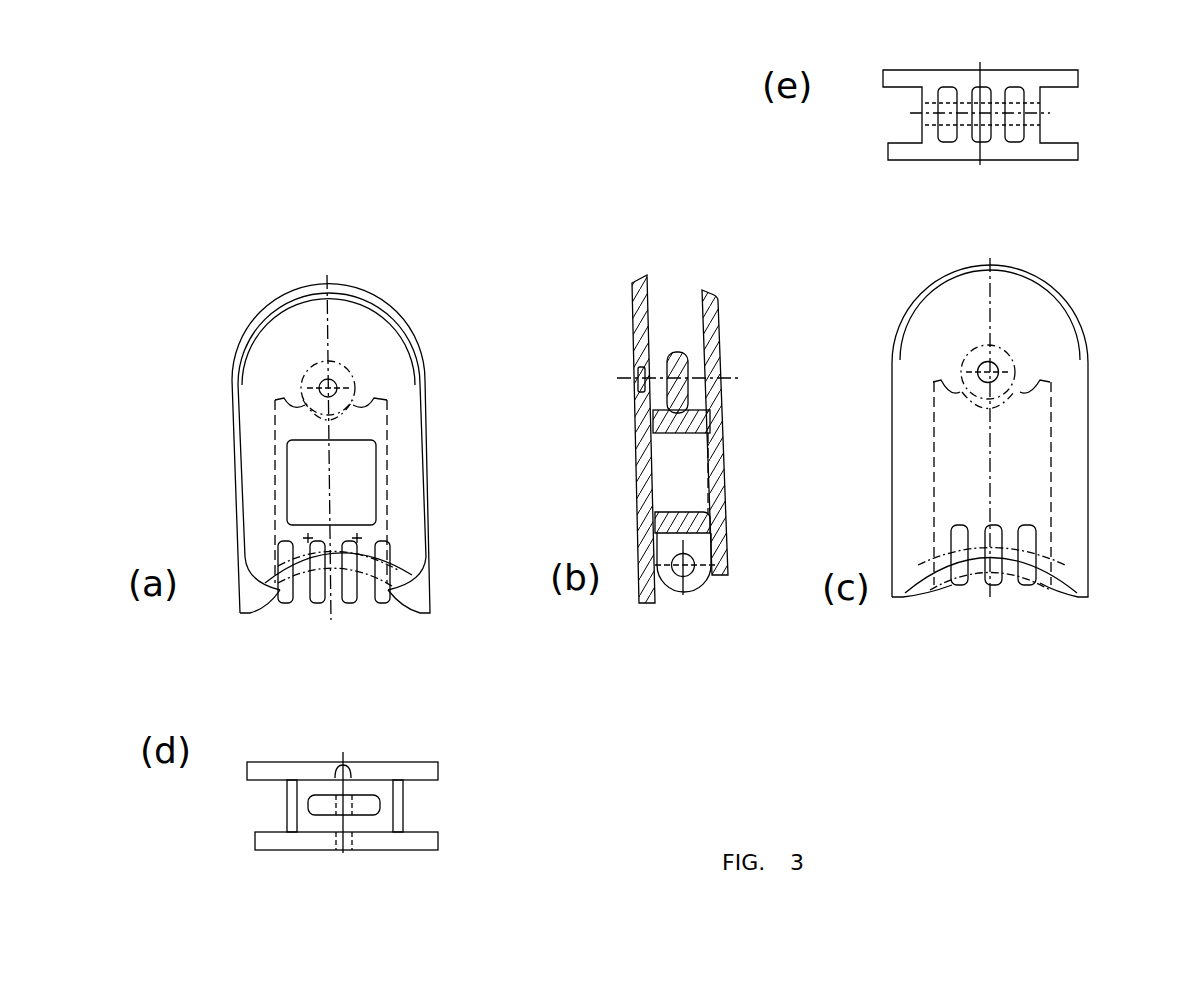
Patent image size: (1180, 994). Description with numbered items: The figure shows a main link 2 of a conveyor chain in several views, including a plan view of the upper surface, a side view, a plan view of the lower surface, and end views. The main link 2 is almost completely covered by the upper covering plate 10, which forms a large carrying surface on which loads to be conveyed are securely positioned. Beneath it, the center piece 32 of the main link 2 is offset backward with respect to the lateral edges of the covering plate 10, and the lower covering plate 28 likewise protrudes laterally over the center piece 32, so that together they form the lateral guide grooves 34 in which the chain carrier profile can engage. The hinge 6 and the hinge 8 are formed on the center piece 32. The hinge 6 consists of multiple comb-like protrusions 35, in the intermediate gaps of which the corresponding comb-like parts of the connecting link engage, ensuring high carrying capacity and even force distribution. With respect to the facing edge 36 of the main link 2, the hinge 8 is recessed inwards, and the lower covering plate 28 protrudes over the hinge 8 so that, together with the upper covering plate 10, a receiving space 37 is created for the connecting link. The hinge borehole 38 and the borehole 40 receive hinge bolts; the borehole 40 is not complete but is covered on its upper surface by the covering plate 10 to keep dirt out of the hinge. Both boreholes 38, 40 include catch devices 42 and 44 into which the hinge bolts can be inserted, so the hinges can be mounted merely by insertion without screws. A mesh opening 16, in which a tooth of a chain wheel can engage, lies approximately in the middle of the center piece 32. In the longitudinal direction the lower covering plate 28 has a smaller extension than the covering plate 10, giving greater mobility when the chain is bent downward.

The main link 2 is at (245, 315).
The hinge 6 is at (712, 580).
The hinge 8 is at (723, 365).
The covering plate 10 is at (628, 352).
The mesh opening 16 is at (348, 468).
The lower covering plate 28 is at (407, 515).
The center piece 32 is at (380, 452).
The lateral guide grooves 34 is at (272, 808).
The comb-like protrusions 35 is at (1047, 586).
The facing edge 36 is at (639, 283).
The receiving space 37 is at (678, 330).
The hinge borehole 38 is at (348, 580).
The borehole 40 is at (329, 389).
The catch device 42 is at (940, 587).
The catch device 44 is at (634, 394).